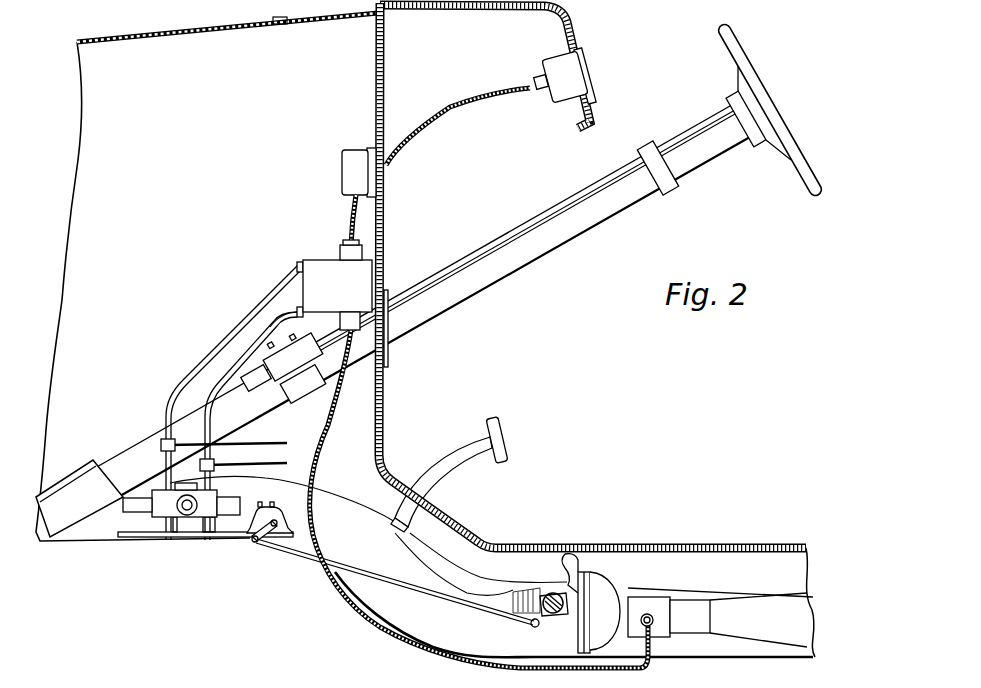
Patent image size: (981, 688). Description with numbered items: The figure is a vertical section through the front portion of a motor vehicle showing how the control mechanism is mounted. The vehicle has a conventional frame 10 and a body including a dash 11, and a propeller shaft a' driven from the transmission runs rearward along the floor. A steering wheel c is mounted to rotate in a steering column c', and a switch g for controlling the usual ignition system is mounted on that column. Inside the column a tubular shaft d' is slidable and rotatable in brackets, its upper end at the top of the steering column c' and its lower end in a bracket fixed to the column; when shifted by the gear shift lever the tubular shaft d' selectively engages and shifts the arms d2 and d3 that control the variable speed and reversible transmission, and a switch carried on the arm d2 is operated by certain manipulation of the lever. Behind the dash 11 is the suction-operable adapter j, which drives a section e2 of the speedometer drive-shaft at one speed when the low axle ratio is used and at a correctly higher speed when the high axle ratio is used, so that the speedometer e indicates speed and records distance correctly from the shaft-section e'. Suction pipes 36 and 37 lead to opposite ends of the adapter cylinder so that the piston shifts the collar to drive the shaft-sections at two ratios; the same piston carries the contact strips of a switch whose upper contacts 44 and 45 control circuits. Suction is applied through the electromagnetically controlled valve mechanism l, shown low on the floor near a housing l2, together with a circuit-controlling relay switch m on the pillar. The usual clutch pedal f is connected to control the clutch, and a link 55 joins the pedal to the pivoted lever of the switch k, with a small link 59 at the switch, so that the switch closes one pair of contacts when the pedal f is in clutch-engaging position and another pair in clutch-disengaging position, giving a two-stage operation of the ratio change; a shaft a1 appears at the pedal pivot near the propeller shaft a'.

The steering wheel c is at (769, 109).
The steering column c' is at (426, 299).
The tubular shaft d' is at (517, 236).
The switch g is at (662, 140).
The speedometer e is at (573, 76).
The speedometer drive-shaft section e2 is at (468, 109).
The shaft-section e' is at (481, 433).
The relay switch m is at (342, 178).
The adapter j is at (355, 280).
The arm d2 is at (292, 340).
The arm d3 is at (270, 360).
The suction pipe 37 is at (185, 384).
The suction pipe 36 is at (251, 426).
The upper contact 44 is at (279, 442).
The upper contact 45 is at (283, 462).
The dash 11 is at (385, 410).
The valve mechanism l is at (192, 520).
The housing block at column lower end l2 is at (165, 508).
The switch k is at (270, 507).
The link 59 is at (257, 545).
The link 55 is at (418, 590).
The frame 10 is at (343, 587).
The pedal f is at (443, 472).
The propeller shaft a' is at (545, 602).
The pedal shaft a1 is at (406, 680).